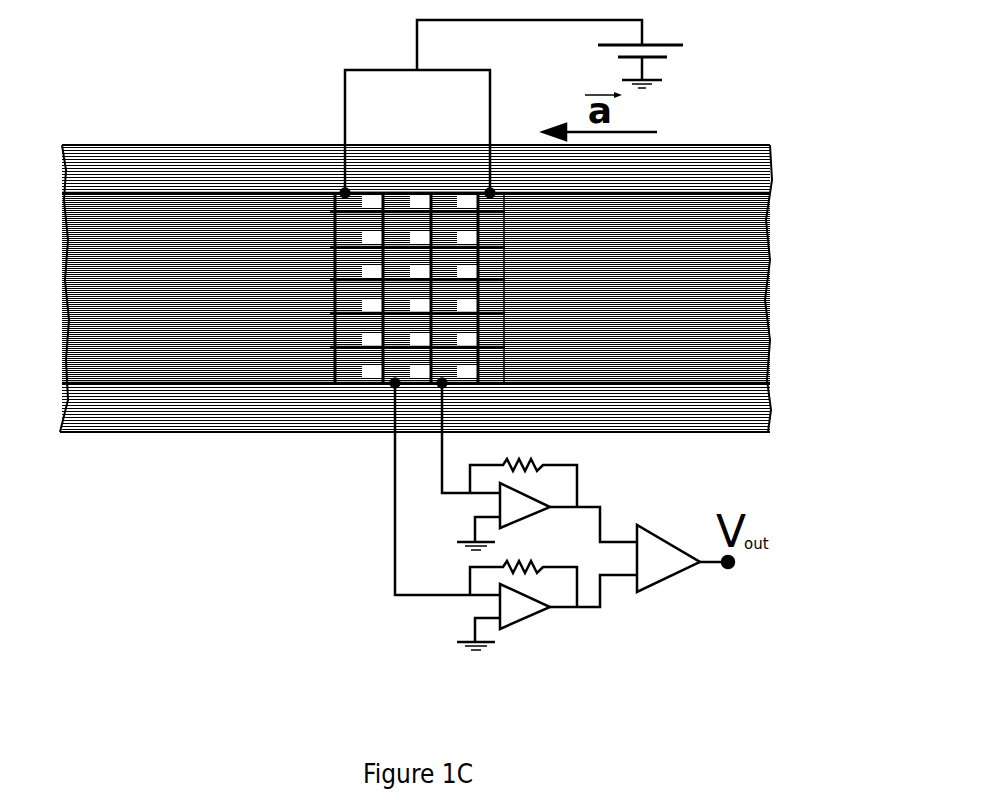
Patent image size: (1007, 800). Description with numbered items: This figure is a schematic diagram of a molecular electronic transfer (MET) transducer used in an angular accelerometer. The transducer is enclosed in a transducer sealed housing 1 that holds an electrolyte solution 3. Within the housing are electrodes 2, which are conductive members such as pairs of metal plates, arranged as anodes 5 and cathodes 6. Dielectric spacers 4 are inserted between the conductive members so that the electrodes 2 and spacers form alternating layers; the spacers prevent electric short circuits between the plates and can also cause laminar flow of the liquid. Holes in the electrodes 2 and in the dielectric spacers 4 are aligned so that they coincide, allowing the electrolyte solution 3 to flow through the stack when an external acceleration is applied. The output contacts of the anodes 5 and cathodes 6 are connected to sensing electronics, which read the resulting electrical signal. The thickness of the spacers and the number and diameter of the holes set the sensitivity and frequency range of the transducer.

The transducer sealed housing 1 is at (110, 167).
The electrodes 2 is at (505, 379).
The electrolyte solution 3 is at (92, 283).
The dielectric spacers 4 is at (497, 197).
The anodes 5 is at (483, 348).
The cathodes 6 is at (438, 348).